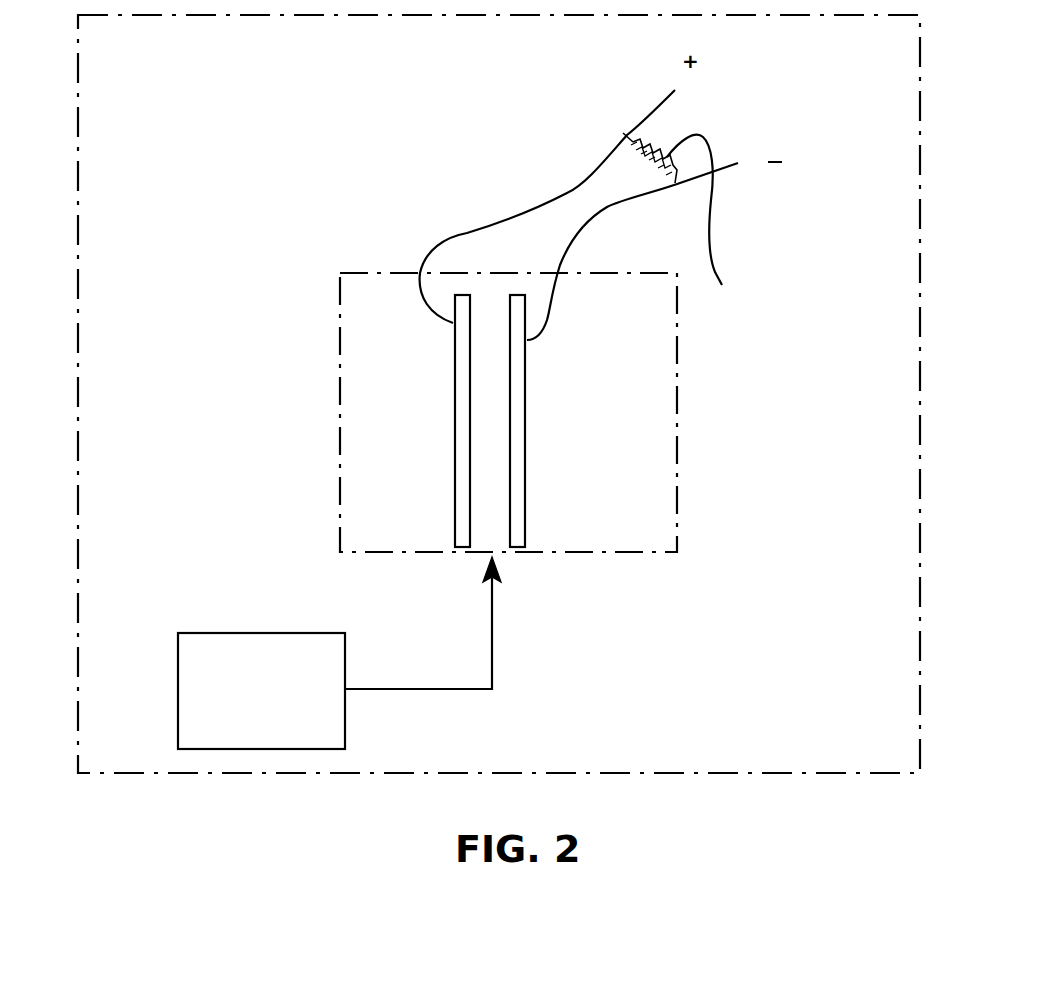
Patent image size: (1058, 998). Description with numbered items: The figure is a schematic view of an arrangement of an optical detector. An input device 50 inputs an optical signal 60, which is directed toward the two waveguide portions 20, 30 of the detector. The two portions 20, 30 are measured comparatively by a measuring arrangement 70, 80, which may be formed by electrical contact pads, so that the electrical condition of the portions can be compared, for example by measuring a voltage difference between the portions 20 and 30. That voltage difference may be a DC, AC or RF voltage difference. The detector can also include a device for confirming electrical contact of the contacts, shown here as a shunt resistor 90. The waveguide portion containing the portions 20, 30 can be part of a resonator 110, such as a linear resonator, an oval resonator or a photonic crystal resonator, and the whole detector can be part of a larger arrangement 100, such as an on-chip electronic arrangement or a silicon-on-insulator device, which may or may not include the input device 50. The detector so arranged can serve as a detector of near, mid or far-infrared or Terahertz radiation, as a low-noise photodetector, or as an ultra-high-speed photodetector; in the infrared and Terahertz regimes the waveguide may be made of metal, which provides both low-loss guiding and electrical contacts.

The portion 20 is at (455, 423).
The portion 30 is at (525, 423).
The input device 50 is at (248, 633).
The optical signal 60 is at (492, 657).
The measuring arrangement 70 is at (473, 232).
The measuring arrangement 80 is at (560, 266).
The shunt resistor 90 is at (710, 225).
The arrangement 100 is at (788, 773).
The resonator 110 is at (677, 477).